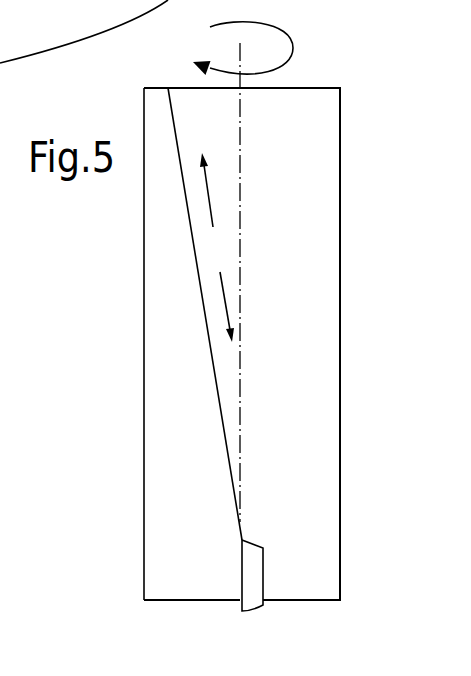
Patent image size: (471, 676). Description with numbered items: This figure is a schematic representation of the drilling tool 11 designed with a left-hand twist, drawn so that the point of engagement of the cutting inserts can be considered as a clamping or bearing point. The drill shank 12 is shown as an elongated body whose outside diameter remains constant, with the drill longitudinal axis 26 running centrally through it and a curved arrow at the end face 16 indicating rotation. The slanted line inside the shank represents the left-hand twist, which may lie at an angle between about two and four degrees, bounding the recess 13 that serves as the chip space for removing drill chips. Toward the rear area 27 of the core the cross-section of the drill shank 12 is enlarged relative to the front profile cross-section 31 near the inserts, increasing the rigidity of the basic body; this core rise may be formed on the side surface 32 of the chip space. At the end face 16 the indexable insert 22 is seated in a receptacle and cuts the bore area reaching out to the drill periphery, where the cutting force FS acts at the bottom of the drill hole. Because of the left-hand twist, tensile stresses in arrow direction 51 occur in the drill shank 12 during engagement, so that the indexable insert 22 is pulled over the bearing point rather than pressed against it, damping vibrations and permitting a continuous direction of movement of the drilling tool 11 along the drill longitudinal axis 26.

The drilling tool 11 is at (108, 220).
The drill shank 12 is at (130, 266).
The recess 13 is at (170, 351).
The rear area 27 is at (201, 425).
The side surface 32 is at (175, 494).
The front profile cross-section 31 is at (121, 542).
The arrow direction 51 is at (215, 219).
The drill longitudinal axis 26 is at (241, 320).
The indexable insert 22 is at (252, 571).
The end face 16 is at (319, 618).
The cutting force FS is at (226, 610).